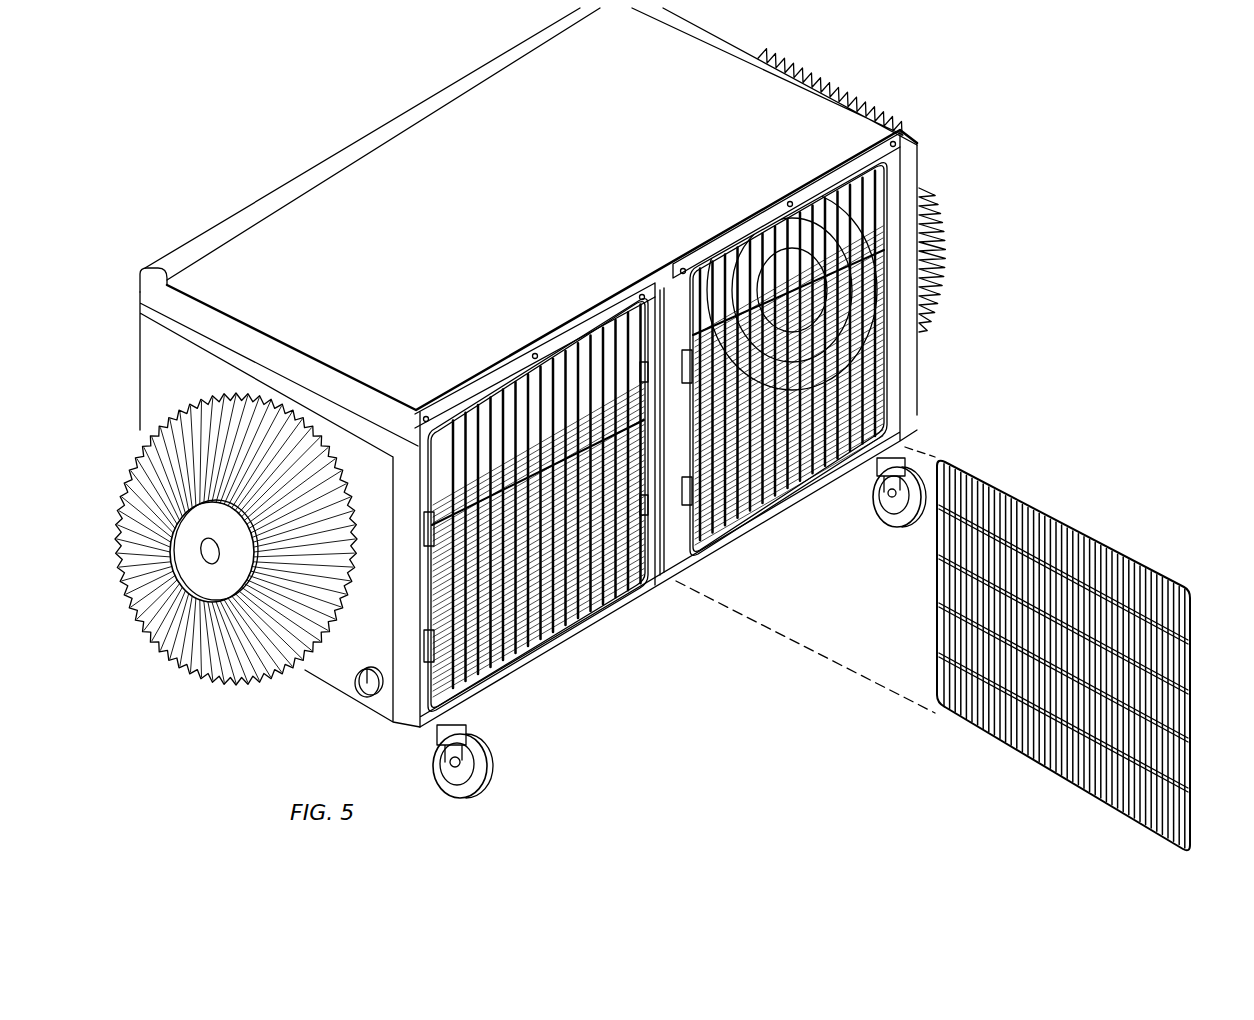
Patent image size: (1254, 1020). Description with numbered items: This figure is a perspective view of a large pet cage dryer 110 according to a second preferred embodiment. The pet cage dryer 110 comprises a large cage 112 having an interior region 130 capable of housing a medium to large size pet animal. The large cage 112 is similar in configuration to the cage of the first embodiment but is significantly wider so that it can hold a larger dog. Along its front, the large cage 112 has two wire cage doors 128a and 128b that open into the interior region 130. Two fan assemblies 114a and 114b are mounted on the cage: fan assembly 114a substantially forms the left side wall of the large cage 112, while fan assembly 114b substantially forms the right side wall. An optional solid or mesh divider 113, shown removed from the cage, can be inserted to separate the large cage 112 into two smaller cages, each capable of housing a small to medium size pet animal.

The pet cage dryer 110 is at (291, 160).
The large cage 112 is at (423, 143).
The divider 113 is at (1053, 512).
The fan assembly 114a is at (197, 657).
The fan assembly 114b is at (862, 78).
The wire cage door 128a is at (553, 407).
The wire cage door 128b is at (772, 235).
The interior region 130 is at (623, 347).